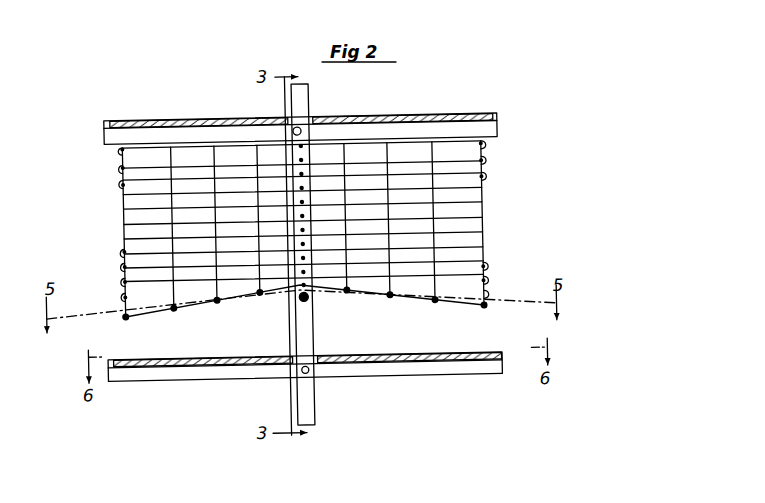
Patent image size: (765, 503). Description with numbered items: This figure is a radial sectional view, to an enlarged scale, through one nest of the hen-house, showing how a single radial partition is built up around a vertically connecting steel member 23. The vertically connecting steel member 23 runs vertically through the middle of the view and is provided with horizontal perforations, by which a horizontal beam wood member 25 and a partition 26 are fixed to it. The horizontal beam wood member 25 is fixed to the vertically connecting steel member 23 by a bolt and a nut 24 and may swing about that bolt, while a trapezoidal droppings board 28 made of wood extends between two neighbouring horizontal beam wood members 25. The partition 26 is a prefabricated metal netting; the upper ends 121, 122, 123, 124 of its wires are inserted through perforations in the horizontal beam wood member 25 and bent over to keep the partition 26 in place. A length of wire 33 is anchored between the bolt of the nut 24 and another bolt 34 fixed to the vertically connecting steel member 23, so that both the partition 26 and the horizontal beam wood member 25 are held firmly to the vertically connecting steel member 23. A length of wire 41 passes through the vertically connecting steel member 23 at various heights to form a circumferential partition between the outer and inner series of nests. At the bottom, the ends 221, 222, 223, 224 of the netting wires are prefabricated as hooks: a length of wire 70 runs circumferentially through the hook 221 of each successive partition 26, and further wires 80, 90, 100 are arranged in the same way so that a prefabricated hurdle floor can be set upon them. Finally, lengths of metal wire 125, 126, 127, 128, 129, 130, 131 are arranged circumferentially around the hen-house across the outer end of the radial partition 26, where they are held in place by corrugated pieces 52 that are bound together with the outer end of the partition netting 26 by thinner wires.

The vertically connecting steel member 23 is at (313, 393).
The nut 24 is at (304, 131).
The horizontal beam wood member 25 is at (410, 378).
The partition 26 is at (476, 212).
The trapezoidal droppings board 28 is at (176, 121).
The length of wire 33 is at (298, 291).
The bolt 34 is at (309, 297).
The length of wire 41 is at (300, 131).
The corrugated piece 52 is at (122, 200).
The length of wire 70 is at (123, 316).
The wire 80 is at (258, 293).
The wire 90 is at (392, 300).
The wire 100 is at (486, 296).
The upper end of netting wire 121 is at (130, 135).
The upper end of netting wire 122 is at (216, 134).
The upper end of netting wire 123 is at (388, 133).
The upper end of netting wire 124 is at (476, 132).
The length of metal wire 125 is at (121, 146).
The length of metal wire 126 is at (122, 165).
The length of metal wire 127 is at (122, 181).
The length of metal wire 128 is at (122, 249).
The length of metal wire 129 is at (122, 264).
The length of metal wire 130 is at (122, 279).
The length of metal wire 131 is at (122, 295).
The bottom end hook of netting wire 221 is at (172, 309).
The bottom end hook of netting wire 222 is at (216, 302).
The bottom end hook of netting wire 223 is at (349, 294).
The bottom end hook of netting wire 224 is at (484, 310).